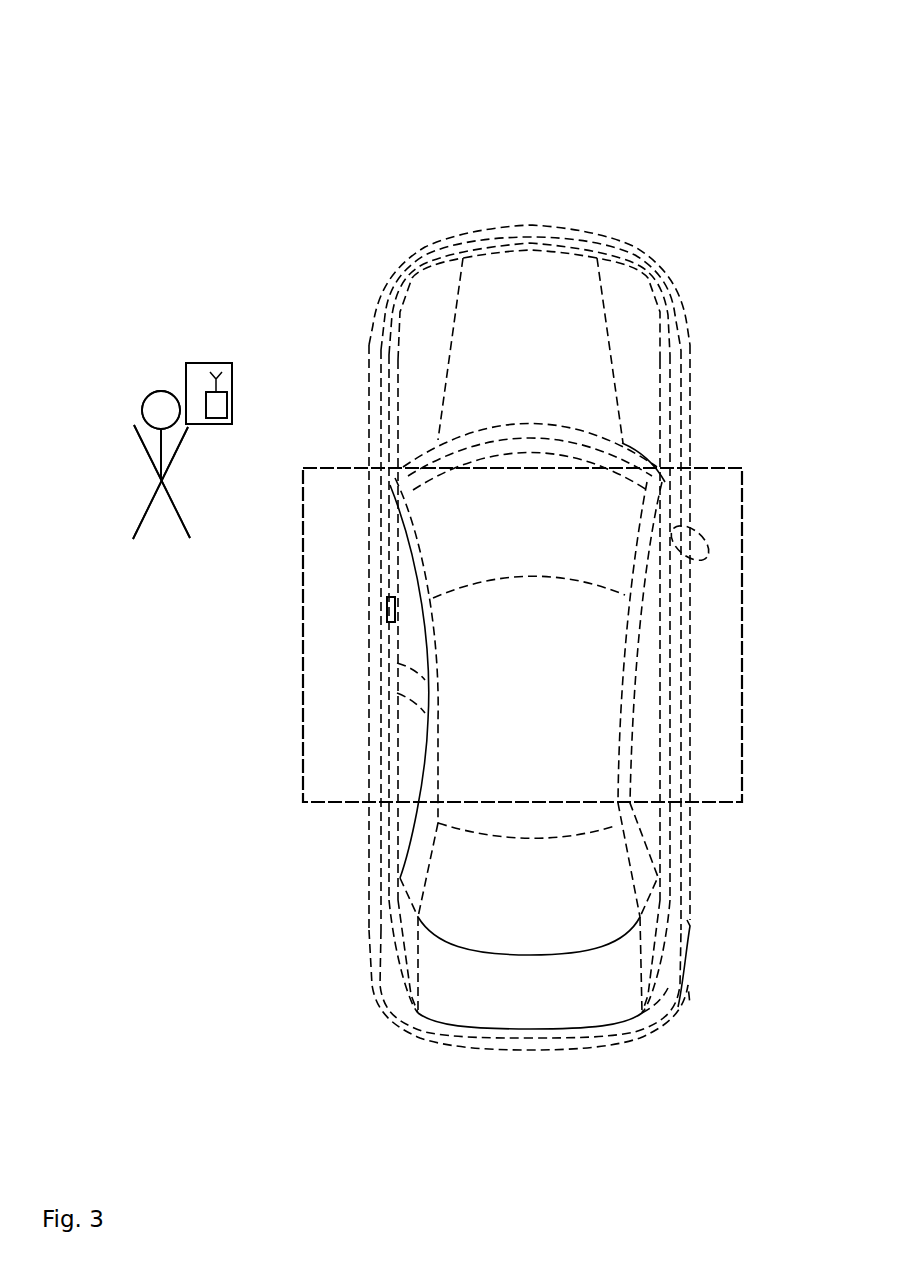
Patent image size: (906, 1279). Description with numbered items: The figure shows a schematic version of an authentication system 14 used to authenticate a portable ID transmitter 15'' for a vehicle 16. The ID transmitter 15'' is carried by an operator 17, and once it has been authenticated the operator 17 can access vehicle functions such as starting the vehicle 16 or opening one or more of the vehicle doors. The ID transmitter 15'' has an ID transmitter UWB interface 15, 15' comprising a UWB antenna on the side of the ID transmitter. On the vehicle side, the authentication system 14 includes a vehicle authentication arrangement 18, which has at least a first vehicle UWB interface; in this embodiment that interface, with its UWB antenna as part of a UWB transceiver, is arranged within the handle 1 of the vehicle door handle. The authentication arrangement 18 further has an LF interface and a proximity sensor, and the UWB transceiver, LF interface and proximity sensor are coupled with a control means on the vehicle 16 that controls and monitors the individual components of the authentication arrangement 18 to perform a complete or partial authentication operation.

The handle 1 is at (388, 605).
The authentication system 14 is at (178, 122).
The ID transmitter UWB interface 15 is at (248, 387).
The ID transmitter UWB interface 15' is at (236, 422).
The ID transmitter 15'' is at (245, 343).
The vehicle 16 is at (428, 166).
The operator 17 is at (148, 465).
The vehicle authentication arrangement 18 is at (712, 468).